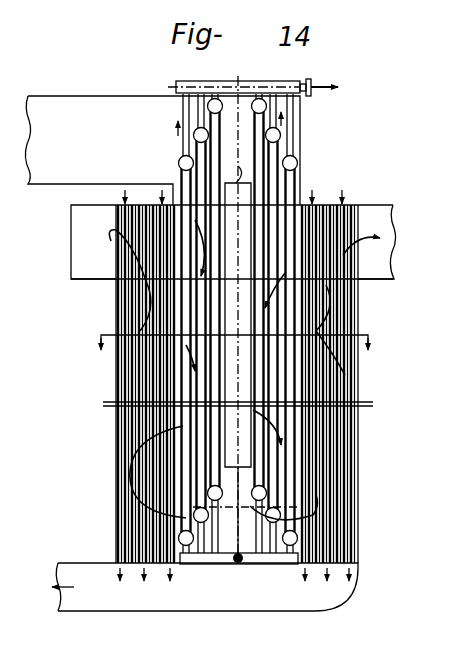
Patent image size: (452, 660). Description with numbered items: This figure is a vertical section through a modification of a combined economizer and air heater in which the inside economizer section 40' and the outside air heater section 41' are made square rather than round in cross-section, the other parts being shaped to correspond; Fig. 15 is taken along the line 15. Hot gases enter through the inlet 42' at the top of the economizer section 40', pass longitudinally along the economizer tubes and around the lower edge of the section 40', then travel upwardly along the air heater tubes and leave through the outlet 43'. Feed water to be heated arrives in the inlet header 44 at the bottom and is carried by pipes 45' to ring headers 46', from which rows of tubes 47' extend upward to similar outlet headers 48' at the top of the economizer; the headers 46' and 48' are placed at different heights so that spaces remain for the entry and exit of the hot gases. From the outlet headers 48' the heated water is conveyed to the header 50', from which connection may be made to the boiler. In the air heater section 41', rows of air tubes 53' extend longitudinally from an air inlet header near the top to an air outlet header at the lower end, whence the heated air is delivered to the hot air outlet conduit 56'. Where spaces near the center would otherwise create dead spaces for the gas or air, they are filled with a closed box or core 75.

The header 50' is at (257, 76).
The inlet 42' is at (162, 150).
The closed box or core 75 is at (262, 184).
The ring outlet header 48' is at (260, 132).
The tube 47' is at (267, 322).
The outlet 43' is at (238, 376).
The section line 15- 15 is at (239, 353).
The air heater section 41' is at (236, 392).
The economizer section 40' is at (141, 384).
The air tube 53' is at (326, 384).
The inlet header 44 is at (210, 556).
The pipe 45' is at (238, 544).
The ring header 46' is at (199, 547).
The hot air outlet conduit 56' is at (205, 602).